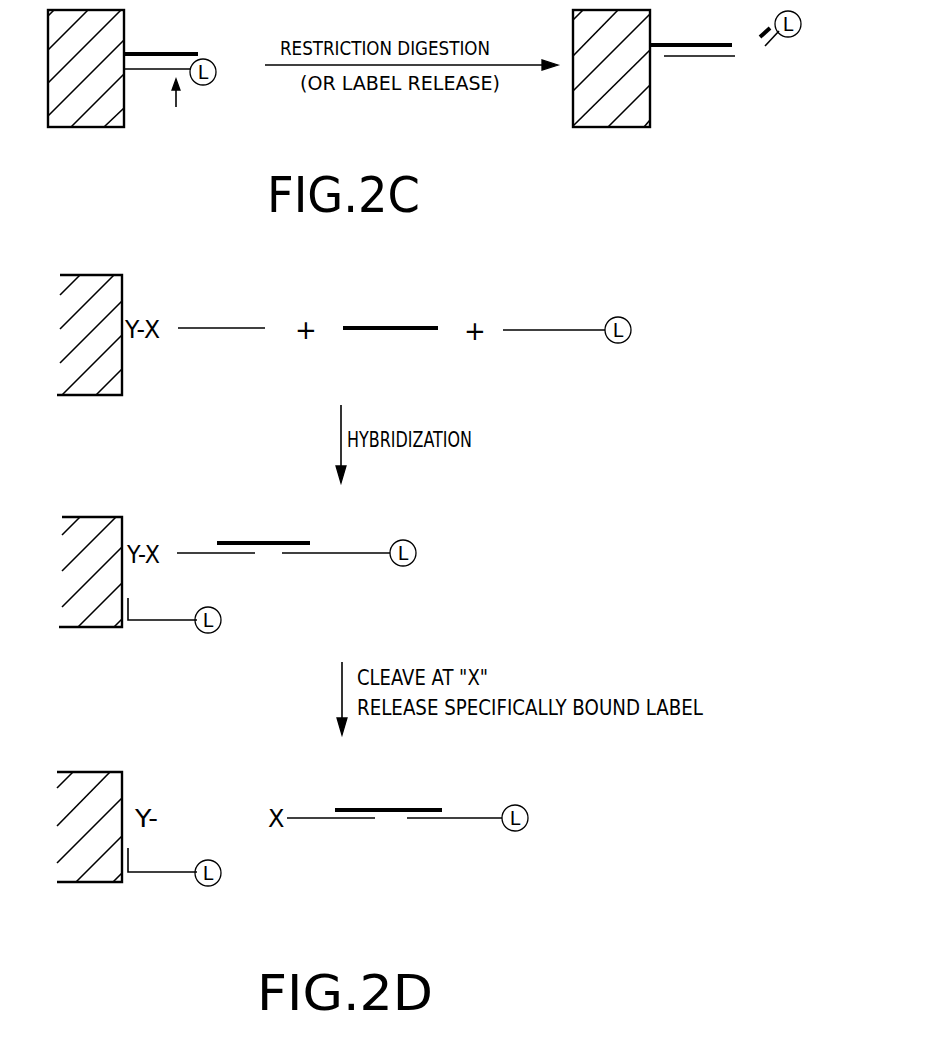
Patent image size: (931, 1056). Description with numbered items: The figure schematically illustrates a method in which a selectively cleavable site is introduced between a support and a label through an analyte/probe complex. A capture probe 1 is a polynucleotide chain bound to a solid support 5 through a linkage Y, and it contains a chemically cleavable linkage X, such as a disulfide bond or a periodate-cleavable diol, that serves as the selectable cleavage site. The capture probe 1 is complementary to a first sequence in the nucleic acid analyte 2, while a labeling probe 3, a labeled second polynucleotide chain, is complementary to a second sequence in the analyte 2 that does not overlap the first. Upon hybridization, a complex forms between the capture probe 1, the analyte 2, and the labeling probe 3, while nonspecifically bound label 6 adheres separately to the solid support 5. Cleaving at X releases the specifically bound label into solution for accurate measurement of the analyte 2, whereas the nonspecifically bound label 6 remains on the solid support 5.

The capture probe 1 is at (200, 329).
The nucleic acid analyte 2 is at (385, 327).
The labeling probe 3 is at (555, 332).
The solid support 5 is at (75, 347).
The nonspecifically bound label 6 is at (168, 622).